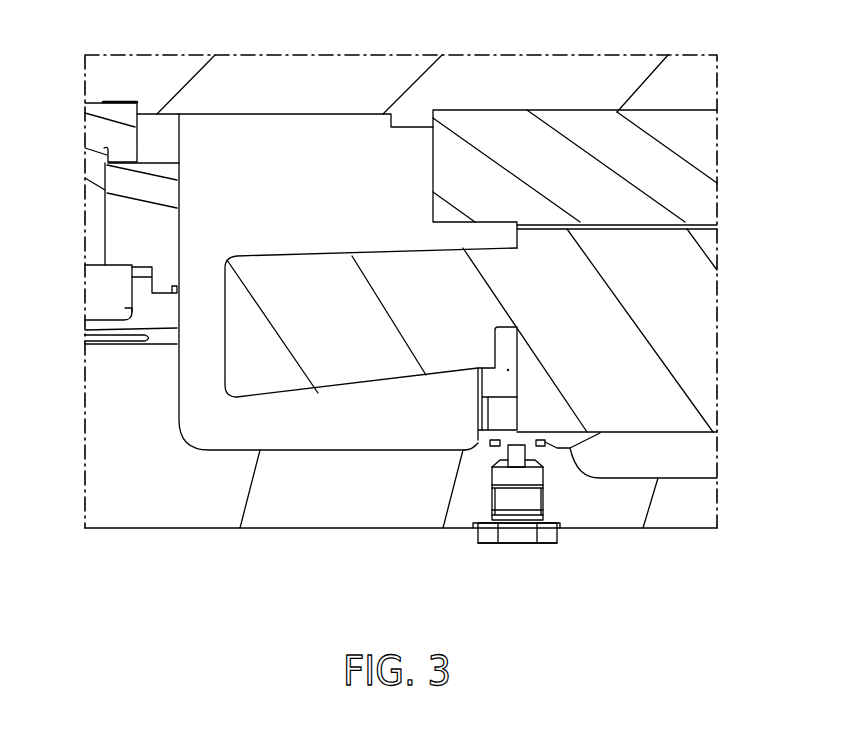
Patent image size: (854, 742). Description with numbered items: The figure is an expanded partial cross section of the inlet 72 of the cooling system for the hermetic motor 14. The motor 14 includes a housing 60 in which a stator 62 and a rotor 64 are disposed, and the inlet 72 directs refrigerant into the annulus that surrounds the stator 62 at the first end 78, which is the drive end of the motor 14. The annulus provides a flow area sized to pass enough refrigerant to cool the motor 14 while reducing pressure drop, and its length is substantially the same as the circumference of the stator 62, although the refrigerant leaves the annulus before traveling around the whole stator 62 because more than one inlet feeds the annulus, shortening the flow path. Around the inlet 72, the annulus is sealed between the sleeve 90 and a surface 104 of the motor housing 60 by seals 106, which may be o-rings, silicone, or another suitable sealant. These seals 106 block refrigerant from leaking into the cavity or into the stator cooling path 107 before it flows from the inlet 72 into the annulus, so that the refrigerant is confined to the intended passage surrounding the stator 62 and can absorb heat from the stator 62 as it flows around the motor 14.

The motor 14 is at (53, 216).
The housing 60 is at (325, 518).
The stator 62 is at (703, 334).
The rotor 64 is at (703, 142).
The inlet 72 is at (547, 537).
The first end 78 is at (495, 558).
The sleeve 90 is at (680, 443).
The surface 104 is at (526, 434).
The seals 106 is at (541, 440).
The stator cooling path 107 is at (665, 457).